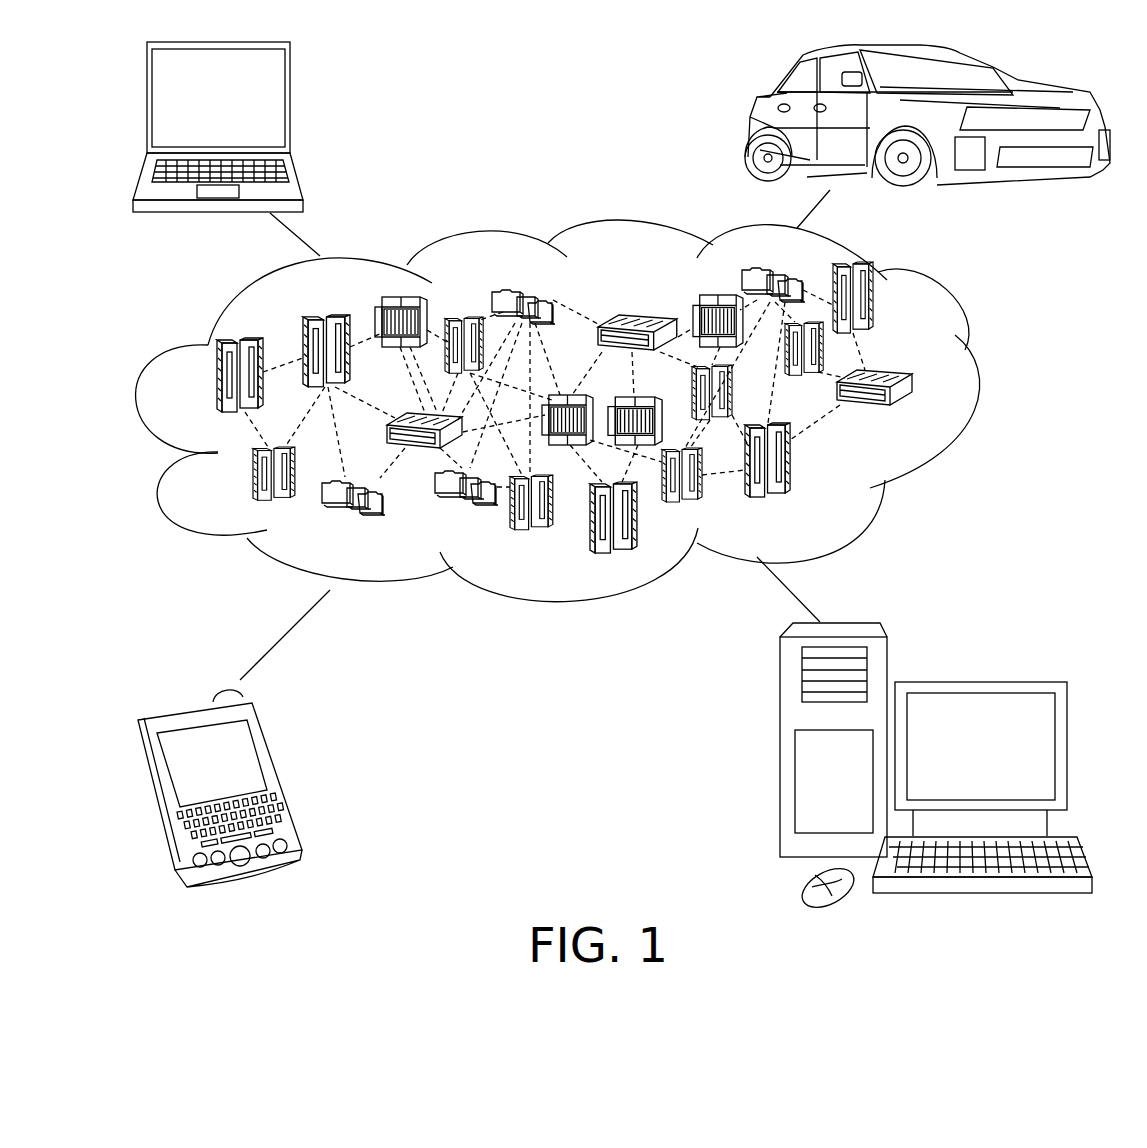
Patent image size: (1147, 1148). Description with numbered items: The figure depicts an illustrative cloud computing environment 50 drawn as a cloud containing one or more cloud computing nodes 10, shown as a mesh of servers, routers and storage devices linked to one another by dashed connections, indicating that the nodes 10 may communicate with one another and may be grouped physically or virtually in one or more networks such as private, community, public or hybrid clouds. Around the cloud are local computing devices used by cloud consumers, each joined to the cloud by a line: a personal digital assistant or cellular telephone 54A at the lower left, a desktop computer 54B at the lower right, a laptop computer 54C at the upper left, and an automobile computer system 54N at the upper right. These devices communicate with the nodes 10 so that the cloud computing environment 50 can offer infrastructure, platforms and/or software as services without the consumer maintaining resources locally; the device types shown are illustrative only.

The cloud computing node 10 is at (914, 416).
The cloud computing environment 50 is at (980, 382).
The personal digital assistant (PDA) or cellular telephone 54A is at (282, 776).
The desktop computer 54B is at (978, 682).
The laptop computer 54C is at (290, 106).
The automobile computer system 54N is at (750, 120).